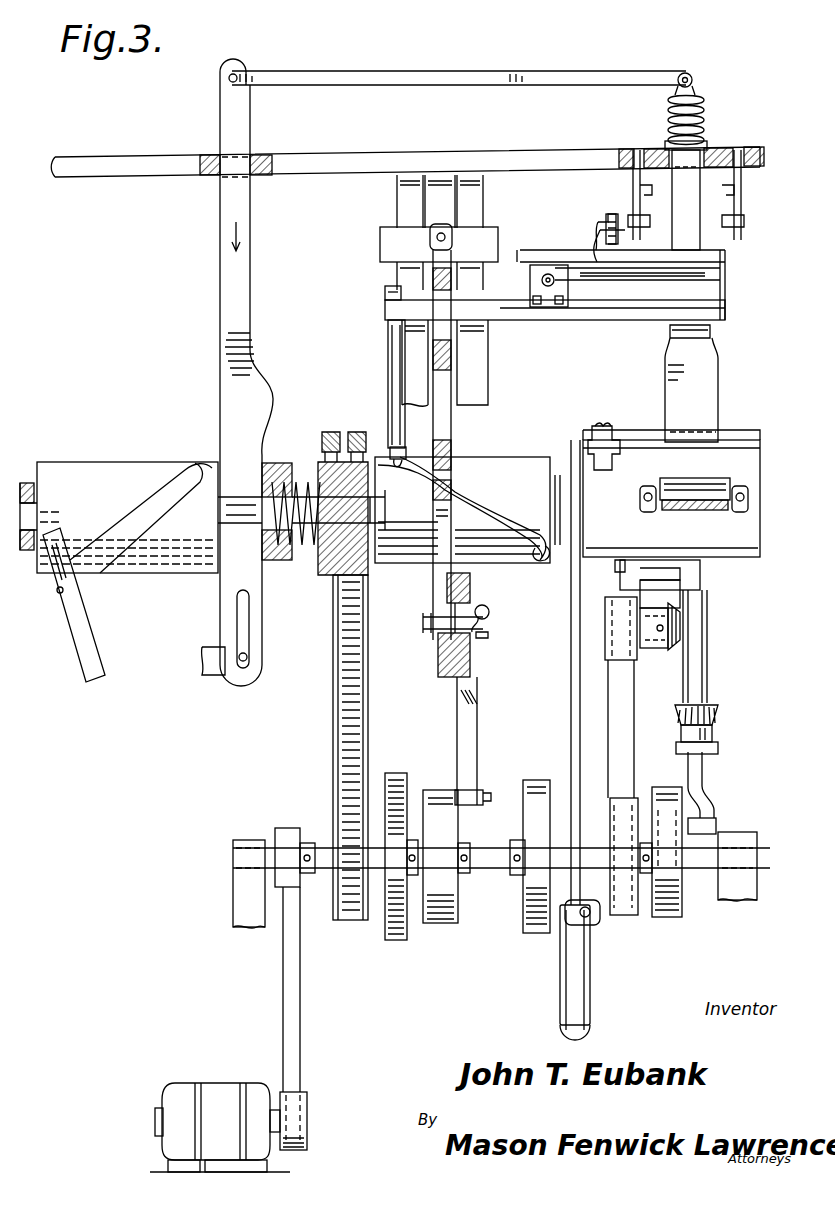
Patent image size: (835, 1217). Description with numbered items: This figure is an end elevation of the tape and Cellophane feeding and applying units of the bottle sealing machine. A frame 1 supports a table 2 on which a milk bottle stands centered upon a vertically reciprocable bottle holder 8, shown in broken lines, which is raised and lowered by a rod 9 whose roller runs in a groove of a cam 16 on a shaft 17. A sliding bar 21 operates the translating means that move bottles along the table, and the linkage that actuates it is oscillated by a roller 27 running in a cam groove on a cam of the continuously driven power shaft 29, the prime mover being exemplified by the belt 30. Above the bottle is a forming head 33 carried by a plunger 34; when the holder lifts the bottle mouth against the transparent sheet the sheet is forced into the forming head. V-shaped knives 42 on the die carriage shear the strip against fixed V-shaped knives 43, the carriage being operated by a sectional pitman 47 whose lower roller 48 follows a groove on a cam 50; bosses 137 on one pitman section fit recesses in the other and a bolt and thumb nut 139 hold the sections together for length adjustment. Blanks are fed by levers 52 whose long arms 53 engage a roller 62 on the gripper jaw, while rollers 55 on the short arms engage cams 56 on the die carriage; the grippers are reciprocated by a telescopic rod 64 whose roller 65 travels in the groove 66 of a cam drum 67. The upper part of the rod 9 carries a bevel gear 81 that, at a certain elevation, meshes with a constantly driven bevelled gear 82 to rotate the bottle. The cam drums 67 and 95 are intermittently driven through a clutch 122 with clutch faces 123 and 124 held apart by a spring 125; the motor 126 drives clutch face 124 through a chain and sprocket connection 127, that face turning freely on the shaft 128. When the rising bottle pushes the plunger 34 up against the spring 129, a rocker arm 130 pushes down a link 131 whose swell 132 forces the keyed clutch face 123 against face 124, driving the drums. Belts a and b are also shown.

The frame 1 is at (325, 163).
The table 2 is at (632, 445).
The bottle holder 8 is at (718, 548).
The rod 9 is at (704, 662).
The cam 16 is at (663, 793).
The shaft 17 is at (500, 840).
The sliding bar 21 is at (612, 440).
The roller 27 is at (383, 297).
The power shaft 29 is at (690, 390).
The belt 30 is at (289, 993).
The forming head 33 is at (714, 272).
The plunger 34 is at (672, 140).
The V-shaped knives 42 is at (383, 230).
The V-shaped knives 43 is at (390, 290).
The pitman 47 is at (432, 580).
The roller 48 is at (476, 792).
The cam 50 is at (428, 925).
The levers 52 is at (602, 222).
The long arm 53 is at (652, 277).
The roller 55 is at (620, 203).
The cams 56 is at (558, 242).
The roller 62 is at (568, 295).
The telescopic rod 64 is at (386, 385).
The roller 65 is at (393, 446).
The groove 66 is at (542, 558).
The cam drum 67 is at (528, 458).
The bevel gear 81 is at (716, 710).
The bevelled gear 82 is at (669, 650).
The cam drum 95 is at (128, 449).
The clutch 122 is at (304, 430).
The clutch face 123 is at (288, 462).
The clutch face 124 is at (326, 447).
The spring 125 is at (300, 562).
The motor 126 is at (212, 1070).
The chain and sprocket connection 127 is at (333, 702).
The shaft 128 is at (322, 577).
The spring 129 is at (742, 92).
The rocker arm 130 is at (428, 56).
The link 131 is at (220, 270).
The swell 132 is at (262, 372).
The bosses 137 is at (447, 600).
The bolt and thumb nut 139 is at (482, 640).
The belt a is at (650, 922).
The gear b is at (530, 935).